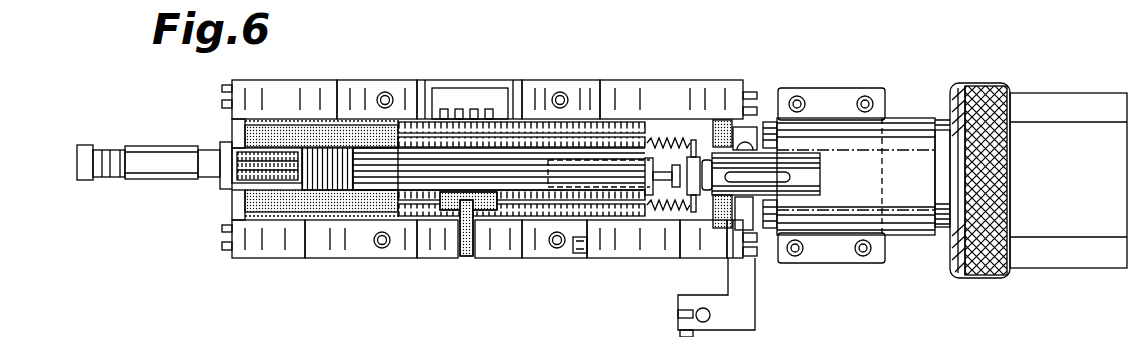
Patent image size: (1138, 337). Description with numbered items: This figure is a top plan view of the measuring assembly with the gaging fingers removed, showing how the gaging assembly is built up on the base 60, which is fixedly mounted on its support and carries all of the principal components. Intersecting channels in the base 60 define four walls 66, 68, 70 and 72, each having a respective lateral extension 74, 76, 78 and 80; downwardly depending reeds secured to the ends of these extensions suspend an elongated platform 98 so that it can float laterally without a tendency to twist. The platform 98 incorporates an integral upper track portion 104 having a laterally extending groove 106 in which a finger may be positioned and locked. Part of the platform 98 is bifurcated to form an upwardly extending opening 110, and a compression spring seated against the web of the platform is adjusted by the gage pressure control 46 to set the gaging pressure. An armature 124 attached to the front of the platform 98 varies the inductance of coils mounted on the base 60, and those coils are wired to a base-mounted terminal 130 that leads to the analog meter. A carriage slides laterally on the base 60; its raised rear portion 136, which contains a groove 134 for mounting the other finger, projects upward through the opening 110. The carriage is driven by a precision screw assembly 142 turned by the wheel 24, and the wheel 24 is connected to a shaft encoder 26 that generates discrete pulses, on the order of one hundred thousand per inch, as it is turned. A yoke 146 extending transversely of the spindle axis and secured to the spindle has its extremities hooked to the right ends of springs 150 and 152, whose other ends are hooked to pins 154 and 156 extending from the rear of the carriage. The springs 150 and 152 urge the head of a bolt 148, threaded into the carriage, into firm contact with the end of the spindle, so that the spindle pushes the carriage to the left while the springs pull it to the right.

The wheel 24 is at (983, 92).
The shaft encoder 26 is at (1086, 254).
The gage pressure control 46 is at (102, 158).
The base 60 is at (550, 80).
The wall 66 is at (366, 259).
The wall 68 is at (609, 261).
The wall 70 is at (366, 88).
The wall 72 is at (620, 140).
The lateral extension 74 is at (262, 248).
The lateral extension 76 is at (720, 263).
The lateral extension 78 is at (248, 91).
The lateral extension 80 is at (719, 100).
The platform 98 is at (527, 190).
The upper track portion 104 is at (812, 192).
The groove 106 is at (512, 168).
The opening 110 is at (340, 179).
The armature 124 is at (461, 240).
The terminal 130 is at (467, 98).
The groove 134 is at (246, 168).
The raised rear portion 136 is at (249, 176).
The precision screw assembly 142 is at (910, 245).
The yoke 146 is at (757, 100).
The bolt 148 is at (668, 218).
The spring 150 is at (651, 138).
The spring 152 is at (661, 214).
The pin 154 is at (641, 140).
The pin 156 is at (574, 255).